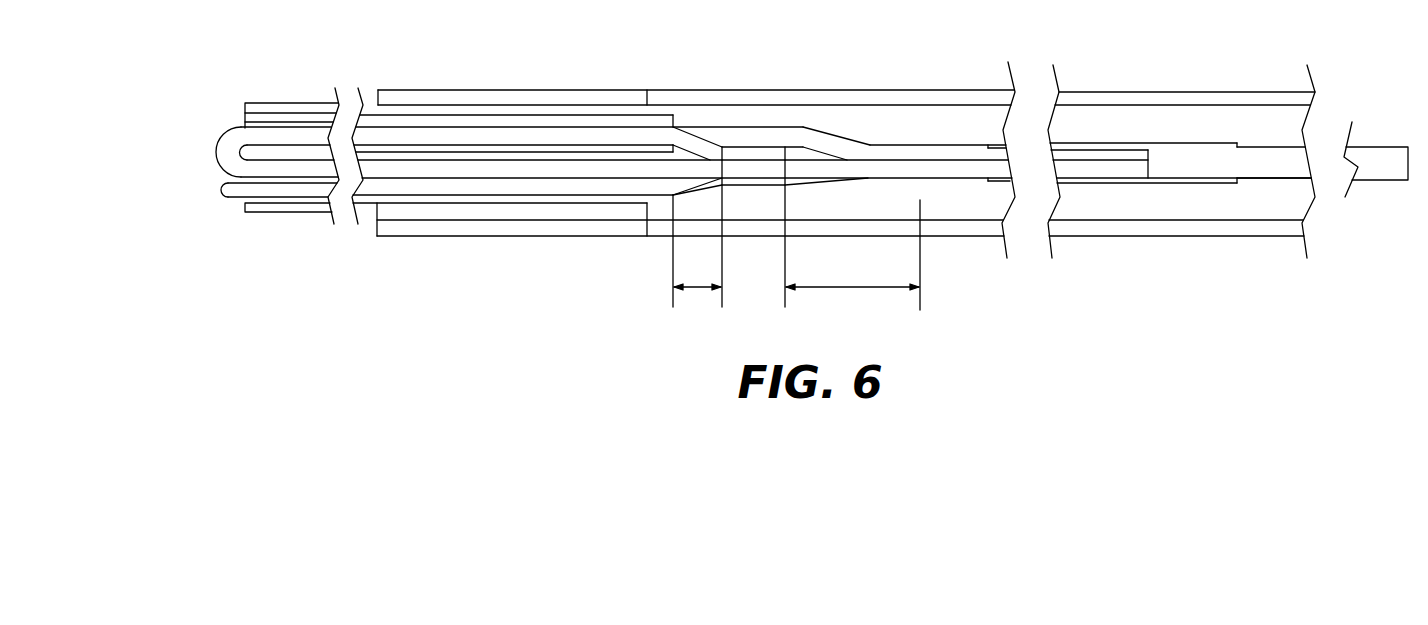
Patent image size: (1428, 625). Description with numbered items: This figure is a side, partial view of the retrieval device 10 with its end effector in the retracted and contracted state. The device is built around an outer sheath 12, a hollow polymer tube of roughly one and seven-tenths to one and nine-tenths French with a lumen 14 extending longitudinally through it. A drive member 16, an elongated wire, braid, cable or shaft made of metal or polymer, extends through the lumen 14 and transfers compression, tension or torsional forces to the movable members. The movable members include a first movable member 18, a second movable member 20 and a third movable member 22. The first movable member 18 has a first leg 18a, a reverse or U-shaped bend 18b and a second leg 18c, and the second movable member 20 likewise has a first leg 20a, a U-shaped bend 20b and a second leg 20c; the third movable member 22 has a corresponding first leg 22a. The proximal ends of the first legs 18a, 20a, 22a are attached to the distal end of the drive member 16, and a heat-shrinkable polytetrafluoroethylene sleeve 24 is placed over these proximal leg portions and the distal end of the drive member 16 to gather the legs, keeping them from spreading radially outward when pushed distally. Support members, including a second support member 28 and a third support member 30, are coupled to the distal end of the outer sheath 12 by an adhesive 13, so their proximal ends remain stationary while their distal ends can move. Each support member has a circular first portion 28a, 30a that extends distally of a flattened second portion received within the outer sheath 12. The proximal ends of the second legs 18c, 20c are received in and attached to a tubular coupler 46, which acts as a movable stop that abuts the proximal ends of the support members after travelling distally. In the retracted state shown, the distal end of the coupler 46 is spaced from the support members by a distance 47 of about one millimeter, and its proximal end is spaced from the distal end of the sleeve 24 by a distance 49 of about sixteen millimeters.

The retrieval device 10 is at (771, 247).
The outer sheath 12 is at (770, 89).
The adhesive 13 is at (470, 222).
The lumen 14 is at (883, 124).
The drive member 16 is at (1278, 182).
The first movable member 18 is at (745, 205).
The first leg 18a is at (716, 195).
The U-shaped bend 18b is at (222, 184).
The second leg 18c is at (250, 188).
The second movable member 20 is at (955, 188).
The first leg 20a is at (823, 178).
The U-shaped bend 20b is at (215, 152).
The second leg 20c is at (247, 127).
The third movable member 22 is at (910, 128).
The first leg 22a is at (681, 125).
The sleeve 24 is at (1102, 143).
The second support member 28 is at (548, 206).
The first portion 28a is at (250, 213).
The third support member 30 is at (560, 104).
The first portion 30a is at (246, 112).
The coupler 46 is at (750, 147).
The distance 47 is at (699, 294).
The distance 49 is at (889, 293).